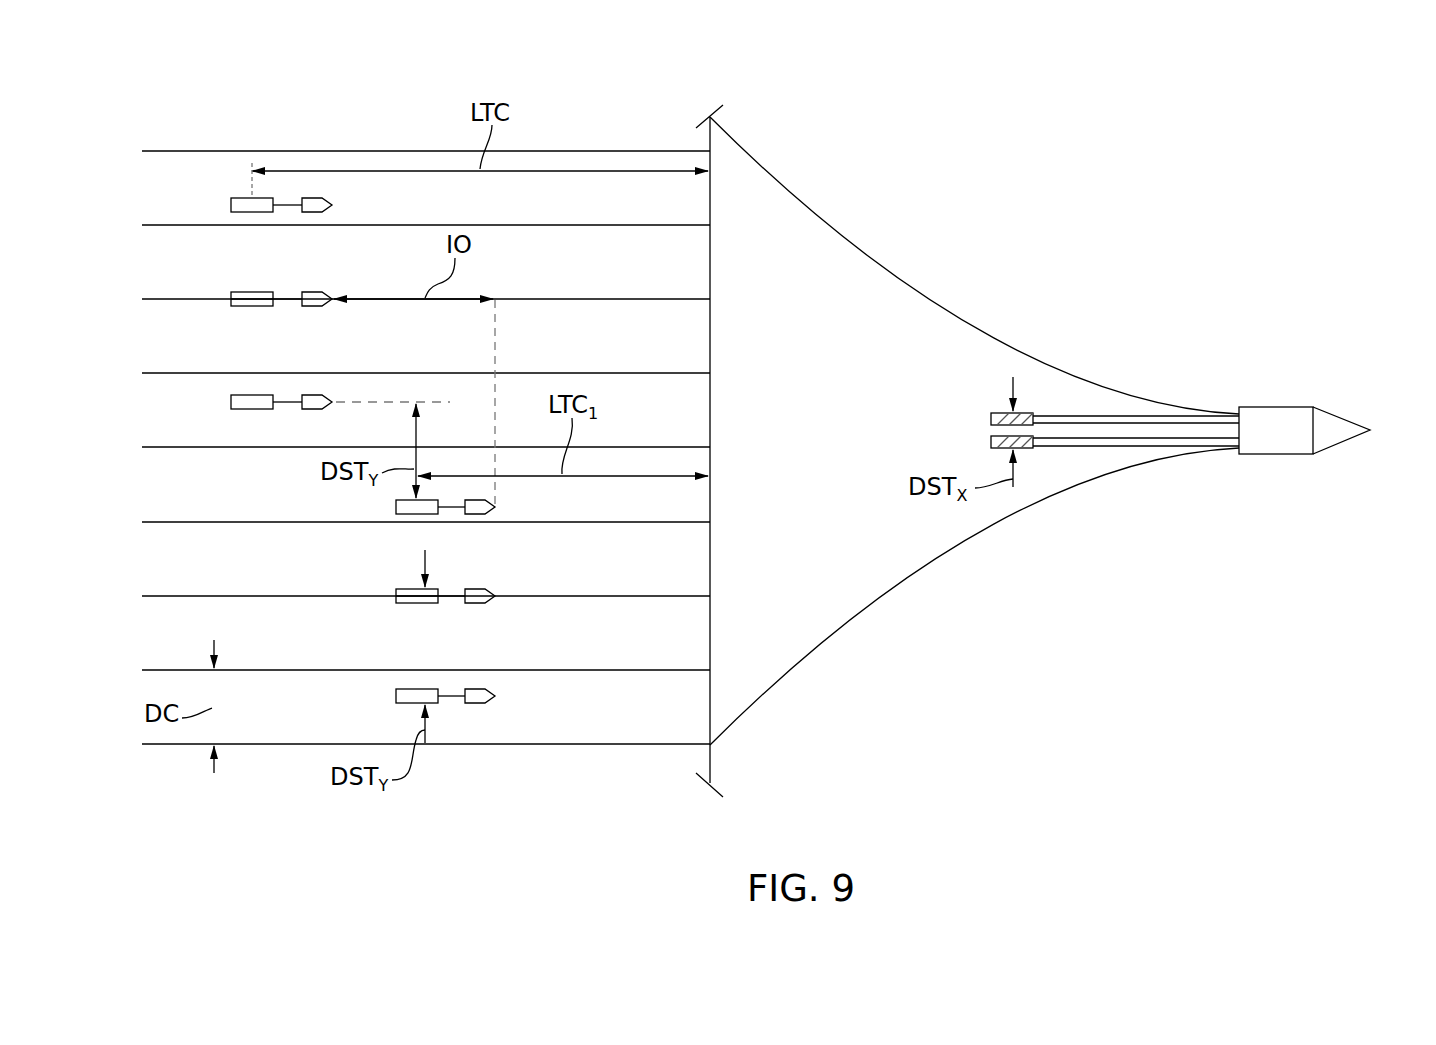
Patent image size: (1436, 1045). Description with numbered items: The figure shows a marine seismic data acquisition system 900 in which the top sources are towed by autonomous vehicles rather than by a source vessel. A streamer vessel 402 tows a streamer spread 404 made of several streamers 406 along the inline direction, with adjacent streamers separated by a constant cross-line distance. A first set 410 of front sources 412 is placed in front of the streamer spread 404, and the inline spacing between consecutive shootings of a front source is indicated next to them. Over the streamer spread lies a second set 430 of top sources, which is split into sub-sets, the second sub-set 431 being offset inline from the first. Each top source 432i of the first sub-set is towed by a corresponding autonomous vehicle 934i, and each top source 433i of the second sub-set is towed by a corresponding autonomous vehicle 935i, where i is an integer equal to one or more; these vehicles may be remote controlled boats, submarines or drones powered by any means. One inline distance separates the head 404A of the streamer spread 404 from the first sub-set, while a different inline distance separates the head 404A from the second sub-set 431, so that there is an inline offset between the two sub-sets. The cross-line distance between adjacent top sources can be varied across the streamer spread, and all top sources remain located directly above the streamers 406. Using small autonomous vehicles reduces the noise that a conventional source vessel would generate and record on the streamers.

The marine seismic data acquisition system 900 is at (1315, 104).
The streamer vessel 402 is at (1268, 397).
The streamer spread 404 is at (295, 757).
The head of the streamer spread 404A is at (720, 349).
The streamers 406 is at (560, 746).
The first set of front sources 410 is at (1037, 460).
The front sources 412 is at (991, 418).
The second set of top sources 430 is at (258, 312).
The second sub-set of top sources 431 is at (398, 612).
The top source 432i is at (264, 292).
The top source 433i is at (398, 589).
The autonomous vehicle 934i is at (312, 292).
The autonomous vehicle 935i is at (478, 589).